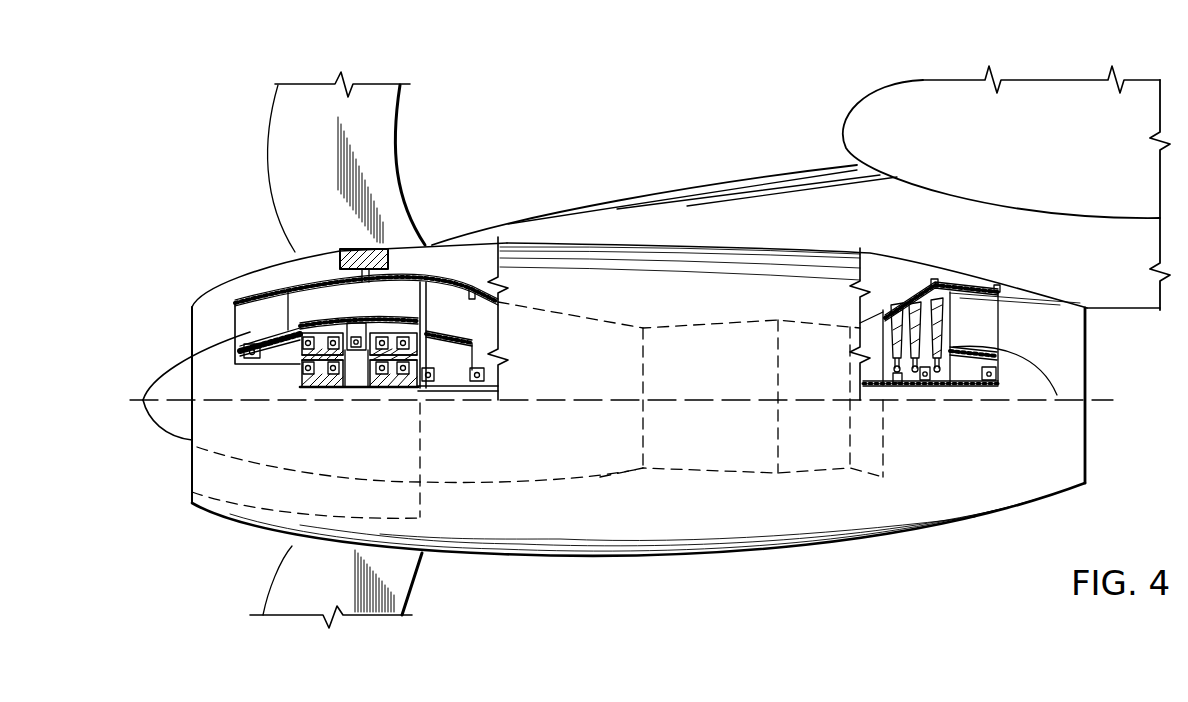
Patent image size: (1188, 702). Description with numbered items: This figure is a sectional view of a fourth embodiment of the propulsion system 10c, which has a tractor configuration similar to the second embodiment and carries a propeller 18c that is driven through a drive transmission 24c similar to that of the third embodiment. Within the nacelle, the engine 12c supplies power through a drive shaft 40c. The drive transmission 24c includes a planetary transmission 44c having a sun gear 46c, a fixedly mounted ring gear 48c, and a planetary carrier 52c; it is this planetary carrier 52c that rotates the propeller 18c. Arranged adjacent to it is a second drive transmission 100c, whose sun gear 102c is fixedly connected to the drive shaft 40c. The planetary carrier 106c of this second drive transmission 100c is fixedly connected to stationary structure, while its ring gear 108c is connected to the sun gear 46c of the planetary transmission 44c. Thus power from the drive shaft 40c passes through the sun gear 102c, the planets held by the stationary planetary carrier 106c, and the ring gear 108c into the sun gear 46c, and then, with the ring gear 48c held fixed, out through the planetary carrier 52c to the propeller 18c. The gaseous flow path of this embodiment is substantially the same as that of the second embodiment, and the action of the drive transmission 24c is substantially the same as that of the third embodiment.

The turboprop propulsion system 10c is at (251, 243).
The propeller 18c is at (390, 113).
The drive transmission 24c is at (368, 311).
The planetary transmission 44c is at (316, 311).
The ring gear 48c is at (300, 305).
The planetary carrier 52c is at (294, 365).
The sun gear 46c is at (312, 389).
The sun gear 102c is at (391, 389).
The second drive transmission 100c is at (397, 333).
The ring gear 108c is at (410, 311).
The drive shaft 40c is at (427, 357).
The planetary carrier 106c is at (432, 366).
The gas turbine engine 12c is at (694, 327).